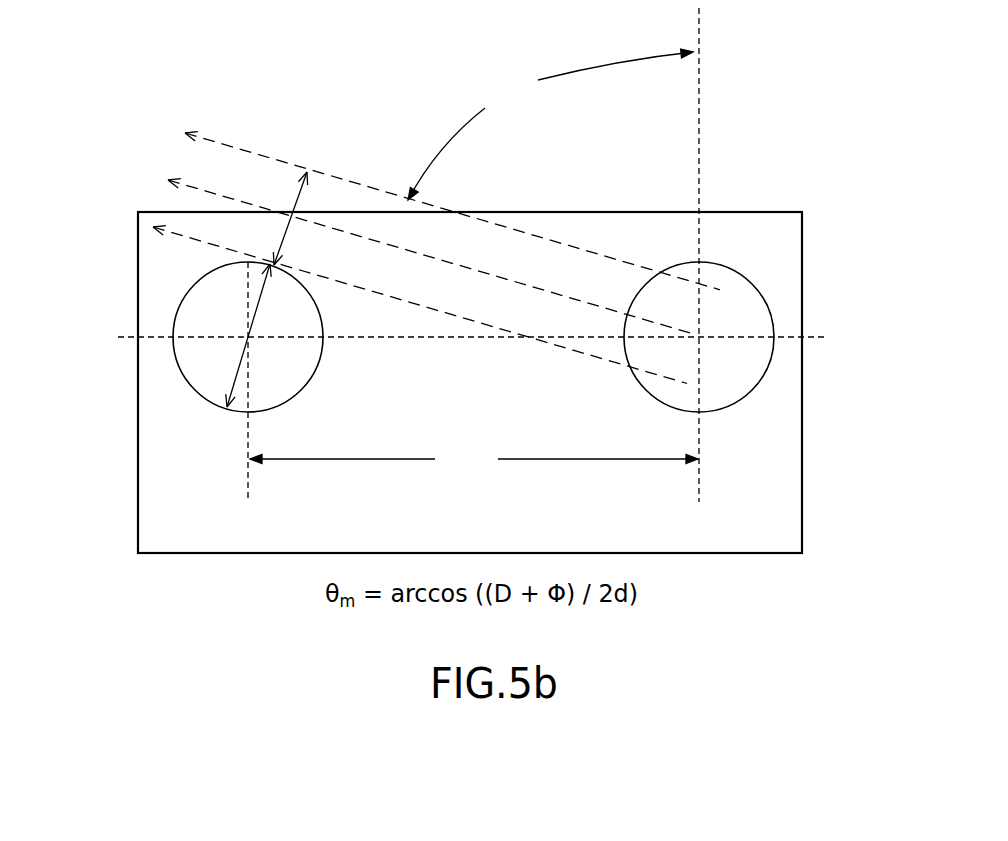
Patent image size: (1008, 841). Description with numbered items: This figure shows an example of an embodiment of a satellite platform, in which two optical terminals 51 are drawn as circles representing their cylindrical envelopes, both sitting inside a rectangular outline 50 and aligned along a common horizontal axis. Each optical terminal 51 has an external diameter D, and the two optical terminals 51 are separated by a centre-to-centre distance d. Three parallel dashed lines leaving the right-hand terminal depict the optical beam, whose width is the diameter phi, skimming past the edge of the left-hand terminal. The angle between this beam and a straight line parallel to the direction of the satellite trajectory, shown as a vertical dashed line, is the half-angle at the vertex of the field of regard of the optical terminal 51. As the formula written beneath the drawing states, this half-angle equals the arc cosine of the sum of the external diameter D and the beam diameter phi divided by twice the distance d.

The substrate / block 50 is at (803, 398).
The optical terminal 51 is at (190, 290).
The external diameter D is at (251, 335).
The distance separating the two optical terminals d is at (474, 458).
The diameter of the optical beam phi is at (279, 218).